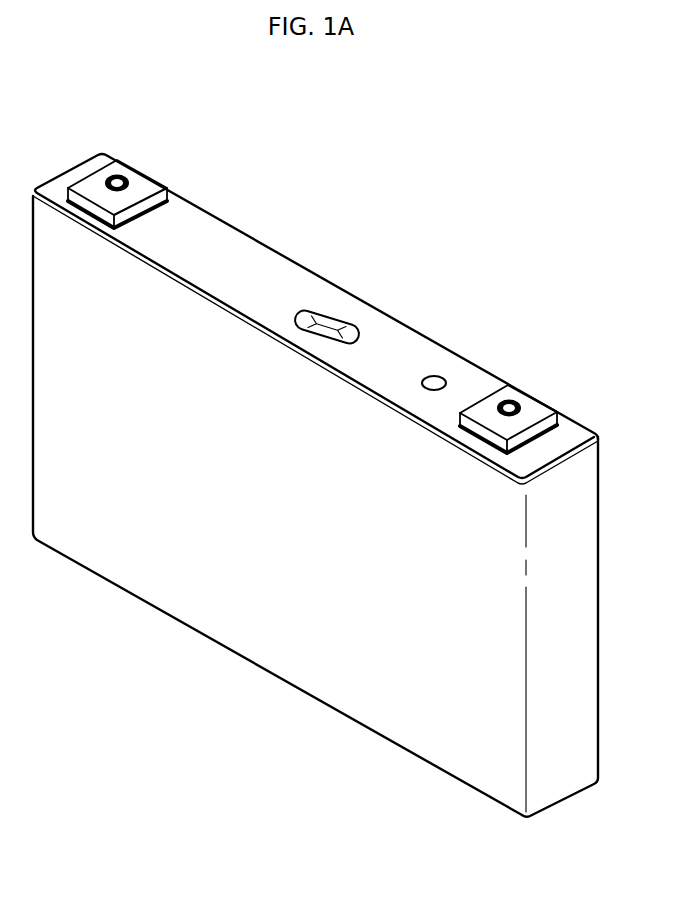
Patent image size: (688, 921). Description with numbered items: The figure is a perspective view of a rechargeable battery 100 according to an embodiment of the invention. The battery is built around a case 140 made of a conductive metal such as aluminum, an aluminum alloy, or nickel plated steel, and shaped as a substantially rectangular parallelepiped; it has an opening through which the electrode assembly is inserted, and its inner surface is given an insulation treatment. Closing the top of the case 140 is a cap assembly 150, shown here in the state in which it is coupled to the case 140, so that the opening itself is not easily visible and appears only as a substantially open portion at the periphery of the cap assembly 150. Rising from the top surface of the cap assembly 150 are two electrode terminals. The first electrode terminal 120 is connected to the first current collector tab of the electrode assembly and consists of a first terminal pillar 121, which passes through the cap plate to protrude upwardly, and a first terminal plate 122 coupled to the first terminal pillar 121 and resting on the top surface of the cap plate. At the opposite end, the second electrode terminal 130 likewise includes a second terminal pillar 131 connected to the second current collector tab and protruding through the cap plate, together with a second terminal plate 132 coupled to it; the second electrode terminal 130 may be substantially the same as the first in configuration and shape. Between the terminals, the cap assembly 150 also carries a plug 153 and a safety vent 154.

The rechargeable battery 100 is at (526, 241).
The first electrode terminal 120 is at (115, 102).
The first terminal pillar 121 is at (118, 176).
The first terminal plate 122 is at (148, 178).
The second electrode terminal 130 is at (505, 329).
The second terminal pillar 131 is at (510, 400).
The second terminal plate 132 is at (542, 405).
The case 140 is at (252, 645).
The cap assembly 150 is at (238, 247).
The plug 153 is at (431, 375).
The safety vent 154 is at (337, 315).